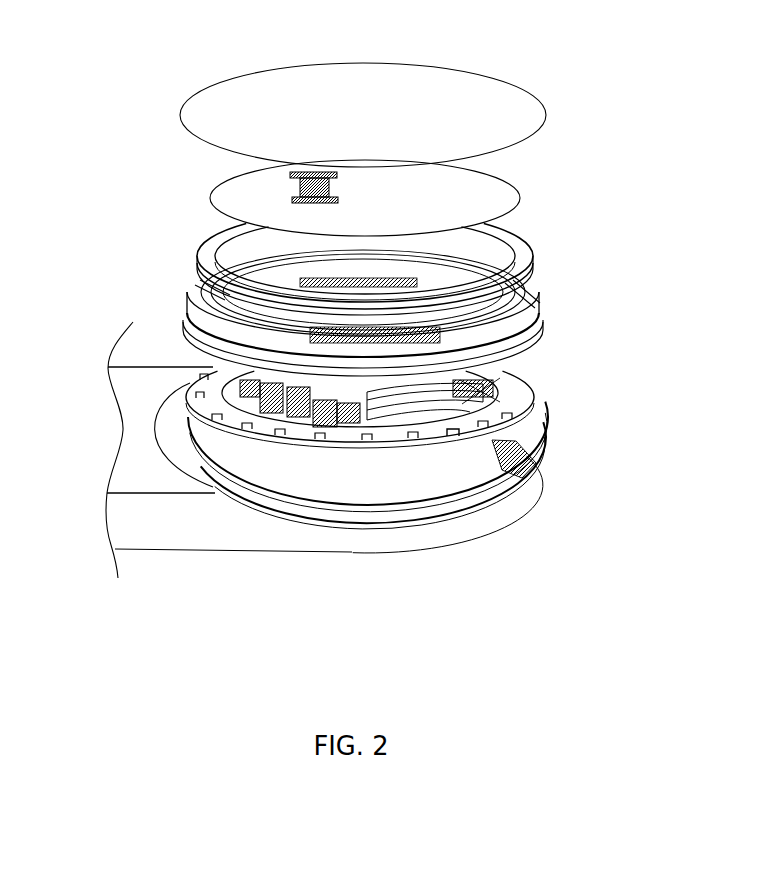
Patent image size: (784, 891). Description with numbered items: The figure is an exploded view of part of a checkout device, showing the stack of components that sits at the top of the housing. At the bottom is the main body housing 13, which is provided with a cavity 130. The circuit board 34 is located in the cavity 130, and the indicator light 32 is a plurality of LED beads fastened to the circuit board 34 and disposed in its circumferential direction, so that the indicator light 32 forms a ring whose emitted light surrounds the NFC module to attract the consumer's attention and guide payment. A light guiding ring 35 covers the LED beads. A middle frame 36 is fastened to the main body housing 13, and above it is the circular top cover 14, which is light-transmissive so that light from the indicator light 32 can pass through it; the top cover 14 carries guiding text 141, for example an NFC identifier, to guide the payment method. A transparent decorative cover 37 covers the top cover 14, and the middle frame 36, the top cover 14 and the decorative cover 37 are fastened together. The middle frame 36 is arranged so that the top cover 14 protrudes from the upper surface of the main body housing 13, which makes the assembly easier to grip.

The main body housing 13 is at (140, 542).
The cavity 130 is at (350, 490).
The top cover 14 is at (470, 197).
The guiding text 141 is at (300, 192).
The indicator light 32 is at (453, 437).
The circuit board 34 is at (507, 393).
The light guiding ring 35 is at (202, 263).
The middle frame 36 is at (536, 318).
The decorative cover 37 is at (253, 100).